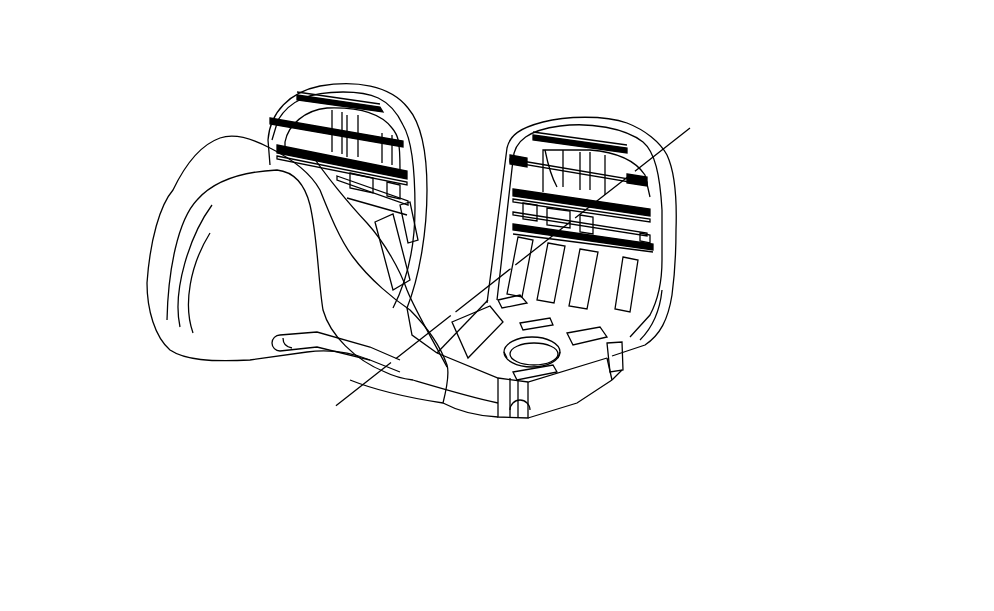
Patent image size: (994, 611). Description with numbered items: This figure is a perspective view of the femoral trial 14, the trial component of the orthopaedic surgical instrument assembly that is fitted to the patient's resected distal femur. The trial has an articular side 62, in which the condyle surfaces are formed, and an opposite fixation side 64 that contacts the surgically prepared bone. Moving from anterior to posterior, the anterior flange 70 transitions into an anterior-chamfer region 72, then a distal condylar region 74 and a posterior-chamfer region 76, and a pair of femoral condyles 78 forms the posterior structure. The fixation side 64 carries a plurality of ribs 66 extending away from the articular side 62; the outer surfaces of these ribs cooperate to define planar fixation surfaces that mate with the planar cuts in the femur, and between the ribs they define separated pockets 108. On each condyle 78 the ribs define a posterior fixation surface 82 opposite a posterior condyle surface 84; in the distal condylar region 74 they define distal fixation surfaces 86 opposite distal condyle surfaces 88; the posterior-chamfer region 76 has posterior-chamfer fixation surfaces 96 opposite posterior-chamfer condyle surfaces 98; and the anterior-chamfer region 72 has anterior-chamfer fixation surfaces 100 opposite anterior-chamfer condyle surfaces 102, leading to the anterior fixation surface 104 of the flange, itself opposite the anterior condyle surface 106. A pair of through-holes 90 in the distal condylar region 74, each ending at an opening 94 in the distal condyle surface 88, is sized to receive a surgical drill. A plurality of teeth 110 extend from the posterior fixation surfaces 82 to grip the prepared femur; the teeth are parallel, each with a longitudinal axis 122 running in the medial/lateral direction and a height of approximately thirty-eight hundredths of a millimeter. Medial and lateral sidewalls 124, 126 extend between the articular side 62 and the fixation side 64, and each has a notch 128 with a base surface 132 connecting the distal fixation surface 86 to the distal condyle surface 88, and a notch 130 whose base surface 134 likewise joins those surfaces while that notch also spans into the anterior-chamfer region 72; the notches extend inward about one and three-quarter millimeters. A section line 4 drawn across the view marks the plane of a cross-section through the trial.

The section line 4- 4 is at (333, 408).
The femoral trial 14 is at (727, 100).
The articular side 62 is at (213, 390).
The fixation side 64 is at (196, 78).
The ribs 66 is at (291, 105).
The anterior flange 70 is at (137, 168).
The anterior-chamfer region 72 is at (487, 470).
The distal condylar region 74 is at (687, 407).
The posterior-chamfer region 76 is at (725, 268).
The femoral condyles 78 is at (403, 75).
The posterior fixation surface 82 is at (328, 87).
The posterior condyle surface 84 is at (413, 117).
The distal fixation surfaces 86 is at (620, 335).
The distal condyle surface 88 is at (580, 403).
The through-holes 90 is at (613, 310).
The opening 94 is at (540, 342).
The posterior-chamfer fixation surfaces 96 is at (413, 217).
The posterior-chamfer condyle surface 98 is at (663, 293).
The anterior-chamfer fixation surfaces 100 is at (413, 380).
The anterior-chamfer condyle surface 102 is at (443, 412).
The anterior fixation surface 104 is at (224, 136).
The anterior condyle surface 106 is at (177, 203).
The pockets 108 is at (517, 244).
The teeth 110 is at (403, 142).
The longitudinal axis 122 is at (410, 177).
The sidewall 124 is at (473, 407).
The sidewall 126 is at (147, 313).
The notch 128 is at (620, 387).
The notch 130 is at (518, 422).
The base surface 132 is at (625, 368).
The base surface 134 is at (533, 410).